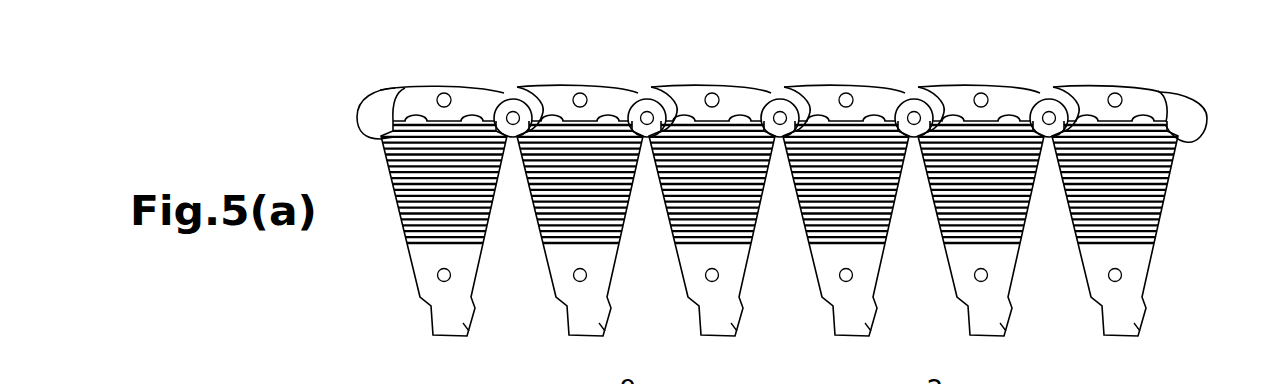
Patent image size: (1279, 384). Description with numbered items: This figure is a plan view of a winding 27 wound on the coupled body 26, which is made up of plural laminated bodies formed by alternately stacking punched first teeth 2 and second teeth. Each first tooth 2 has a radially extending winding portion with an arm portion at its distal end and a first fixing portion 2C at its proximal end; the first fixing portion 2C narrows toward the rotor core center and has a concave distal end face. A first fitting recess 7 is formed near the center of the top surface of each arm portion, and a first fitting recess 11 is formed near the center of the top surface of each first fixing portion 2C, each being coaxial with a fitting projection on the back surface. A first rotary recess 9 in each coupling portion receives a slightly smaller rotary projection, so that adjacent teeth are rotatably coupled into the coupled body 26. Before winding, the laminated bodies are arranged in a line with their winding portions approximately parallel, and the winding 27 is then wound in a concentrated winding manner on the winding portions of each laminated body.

The first tooth 2 is at (603, 92).
The first fixing portion 2C is at (558, 334).
The first fitting recess 7 is at (443, 93).
The first rotary recess 9 is at (646, 113).
The first fitting recess 11 is at (450, 276).
The coupled body 26 is at (1223, 80).
The winding 27 is at (534, 215).